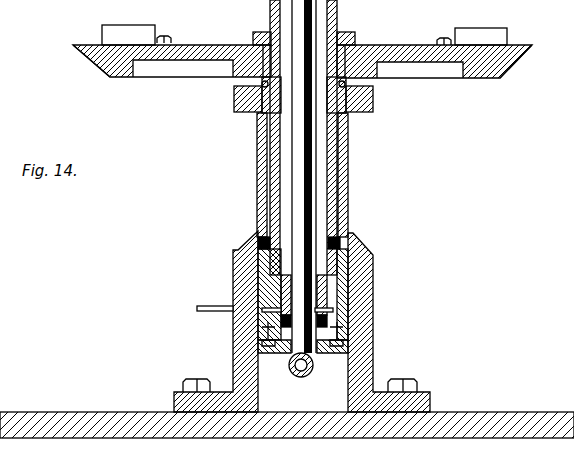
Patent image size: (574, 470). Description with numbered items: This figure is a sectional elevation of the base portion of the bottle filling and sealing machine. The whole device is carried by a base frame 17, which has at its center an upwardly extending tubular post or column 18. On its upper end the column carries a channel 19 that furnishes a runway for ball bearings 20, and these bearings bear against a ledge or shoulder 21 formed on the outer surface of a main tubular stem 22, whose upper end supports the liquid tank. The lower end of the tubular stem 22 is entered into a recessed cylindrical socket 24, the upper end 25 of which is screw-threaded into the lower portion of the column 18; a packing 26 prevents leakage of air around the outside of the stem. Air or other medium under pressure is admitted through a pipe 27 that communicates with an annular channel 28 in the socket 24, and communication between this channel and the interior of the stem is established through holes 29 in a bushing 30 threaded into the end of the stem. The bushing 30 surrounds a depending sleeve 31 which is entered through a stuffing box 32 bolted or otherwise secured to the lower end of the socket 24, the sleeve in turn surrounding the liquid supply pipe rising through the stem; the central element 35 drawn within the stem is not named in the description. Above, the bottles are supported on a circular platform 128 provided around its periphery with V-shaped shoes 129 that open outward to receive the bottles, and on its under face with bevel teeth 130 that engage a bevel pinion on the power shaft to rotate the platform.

The base frame 17 is at (452, 412).
The tubular post or column 18 is at (362, 333).
The channel 19 is at (374, 99).
The ball bearings 20 is at (251, 112).
The ledge or shoulder 21 is at (263, 80).
The main tubular stem 22 is at (338, 172).
The recessed cylindrical socket 24 is at (340, 285).
The upper end of socket 25 is at (342, 252).
The packing 26 is at (258, 252).
The pipe 27 is at (210, 311).
The annular channel 28 is at (333, 310).
The holes 29 is at (281, 308).
The bushing 30 is at (283, 282).
The depending sleeve 31 is at (266, 333).
The stuffing box 32 is at (335, 344).
The shaft 35 is at (309, 205).
The circular platform 128 is at (403, 46).
The shoes 129 is at (146, 25).
The bevel teeth 130 is at (97, 70).